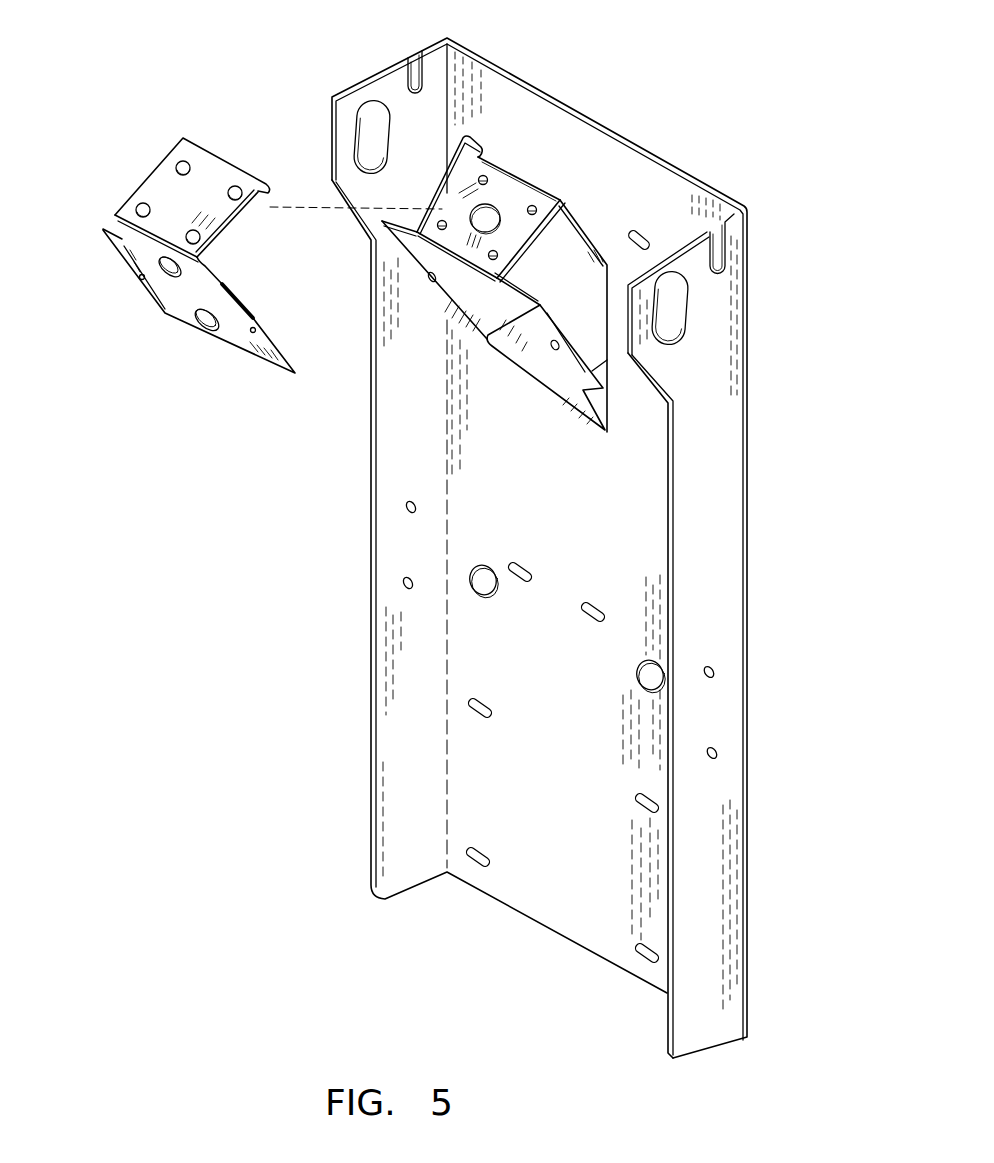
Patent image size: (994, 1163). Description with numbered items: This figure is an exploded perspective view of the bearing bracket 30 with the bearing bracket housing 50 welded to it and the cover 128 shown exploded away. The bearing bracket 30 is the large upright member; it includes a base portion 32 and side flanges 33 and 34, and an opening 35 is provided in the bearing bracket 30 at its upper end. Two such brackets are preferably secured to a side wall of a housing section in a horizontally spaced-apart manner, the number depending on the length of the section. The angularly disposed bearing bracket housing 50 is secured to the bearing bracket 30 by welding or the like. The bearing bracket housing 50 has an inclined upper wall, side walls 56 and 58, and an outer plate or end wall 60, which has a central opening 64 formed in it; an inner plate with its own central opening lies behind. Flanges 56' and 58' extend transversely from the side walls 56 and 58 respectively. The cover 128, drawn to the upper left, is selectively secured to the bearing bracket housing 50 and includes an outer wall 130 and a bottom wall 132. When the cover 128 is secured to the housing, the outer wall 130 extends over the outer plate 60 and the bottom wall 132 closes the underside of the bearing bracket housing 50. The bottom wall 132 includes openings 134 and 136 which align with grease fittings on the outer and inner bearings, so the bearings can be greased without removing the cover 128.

The bearing bracket 30 is at (558, 548).
The base portion 32 is at (539, 551).
The side flange 33 is at (402, 543).
The side flange 34 is at (711, 633).
The opening 35 is at (645, 235).
The bearing bracket housing 50 is at (483, 225).
The side wall 56 is at (512, 294).
The flange 56' is at (453, 351).
The side wall 58 is at (408, 126).
The flange 58' is at (394, 283).
The outer plate 60 is at (496, 206).
The central opening 64 is at (521, 170).
The cover 128 is at (170, 218).
The outer wall 130 is at (163, 190).
The bottom wall 132 is at (168, 291).
The opening 134 is at (158, 264).
The opening 136 is at (200, 325).